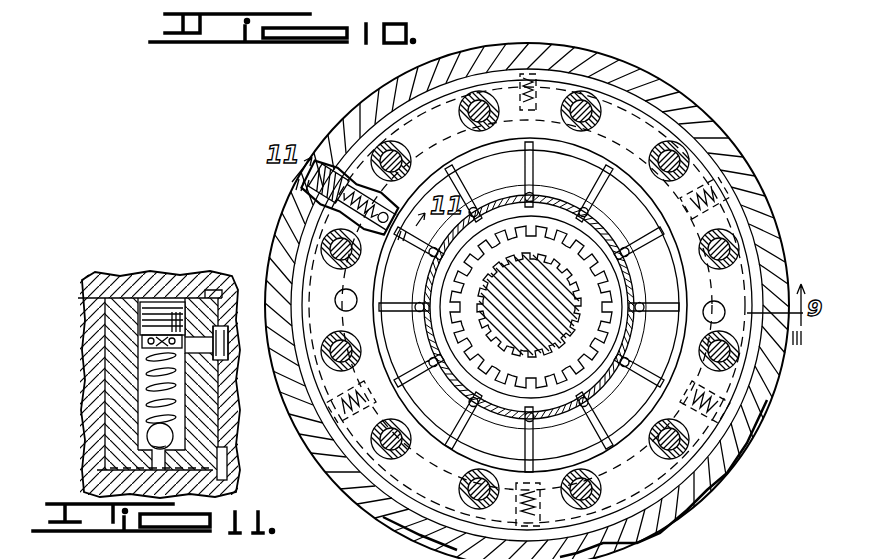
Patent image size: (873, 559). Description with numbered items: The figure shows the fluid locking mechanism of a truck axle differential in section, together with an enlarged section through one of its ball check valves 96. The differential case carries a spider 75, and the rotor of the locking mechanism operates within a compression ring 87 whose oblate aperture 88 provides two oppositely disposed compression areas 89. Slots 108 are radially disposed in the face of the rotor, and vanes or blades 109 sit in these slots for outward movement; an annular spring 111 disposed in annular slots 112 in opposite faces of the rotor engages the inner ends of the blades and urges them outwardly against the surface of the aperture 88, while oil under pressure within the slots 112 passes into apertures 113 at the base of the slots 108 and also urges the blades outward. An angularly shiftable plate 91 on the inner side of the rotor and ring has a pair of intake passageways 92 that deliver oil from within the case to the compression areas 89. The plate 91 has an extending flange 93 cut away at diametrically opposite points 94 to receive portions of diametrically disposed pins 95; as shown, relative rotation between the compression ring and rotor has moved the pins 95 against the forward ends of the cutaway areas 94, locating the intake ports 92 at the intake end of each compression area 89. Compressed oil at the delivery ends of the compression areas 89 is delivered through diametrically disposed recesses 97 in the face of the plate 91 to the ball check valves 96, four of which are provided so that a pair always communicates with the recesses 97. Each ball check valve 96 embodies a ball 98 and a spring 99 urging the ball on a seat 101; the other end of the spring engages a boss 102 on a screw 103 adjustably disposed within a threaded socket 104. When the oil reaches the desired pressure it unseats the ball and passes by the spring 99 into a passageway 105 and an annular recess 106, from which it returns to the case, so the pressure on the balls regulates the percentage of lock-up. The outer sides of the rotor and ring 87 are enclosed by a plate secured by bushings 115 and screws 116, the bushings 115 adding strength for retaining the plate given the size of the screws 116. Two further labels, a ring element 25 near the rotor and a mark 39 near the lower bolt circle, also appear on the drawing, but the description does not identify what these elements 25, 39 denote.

In FIG. 10, the cutaway areas 94 is at (690, 122).
In FIG. 10, the spider 75 is at (410, 525).
In FIG. 10, the recesses 97 is at (458, 152).
In FIG. 10, the compression ring 87 is at (530, 135).
In FIG. 10, the screws 116 is at (673, 455).
In FIG. 10, the bushings 115 is at (683, 470).
In FIG. 10, the pins 95 is at (354, 294).
In FIG. 10, the compression areas 89 is at (503, 150).
In FIG. 10, the inner carrier ring 39 is at (573, 450).
In FIG. 10, the oblate aperture 88 is at (558, 140).
In FIG. 10, the annular spring 111 is at (590, 386).
In FIG. 10, the annular slots 112 is at (539, 426).
In FIG. 10, the apertures 113 is at (524, 416).
In FIG. 10, the angularly shiftable plate 91 is at (668, 124).
In FIG. 10, the extending flange 93 is at (545, 80).
In FIG. 10, the ball check valves 96 is at (345, 210).
In FIG. 11, the ball check valves 96 is at (133, 367).
In FIG. 10, the bearing ring 25 is at (541, 215).
In FIG. 10, the vanes or blades 109 is at (667, 320).
In FIG. 11, the vanes or blades 109 is at (117, 480).
In FIG. 10, the slots 108 is at (648, 308).
In FIG. 10, the intake passageways 92 is at (529, 305).
In FIG. 11, the threaded socket 104 is at (155, 300).
In FIG. 11, the screw 103 is at (140, 313).
In FIG. 11, the boss 102 is at (160, 340).
In FIG. 11, the spring 99 is at (143, 387).
In FIG. 11, the ball 98 is at (143, 437).
In FIG. 11, the seat 101 is at (150, 456).
In FIG. 11, the annular recess 106 is at (228, 370).
In FIG. 11, the passageway 105 is at (213, 298).